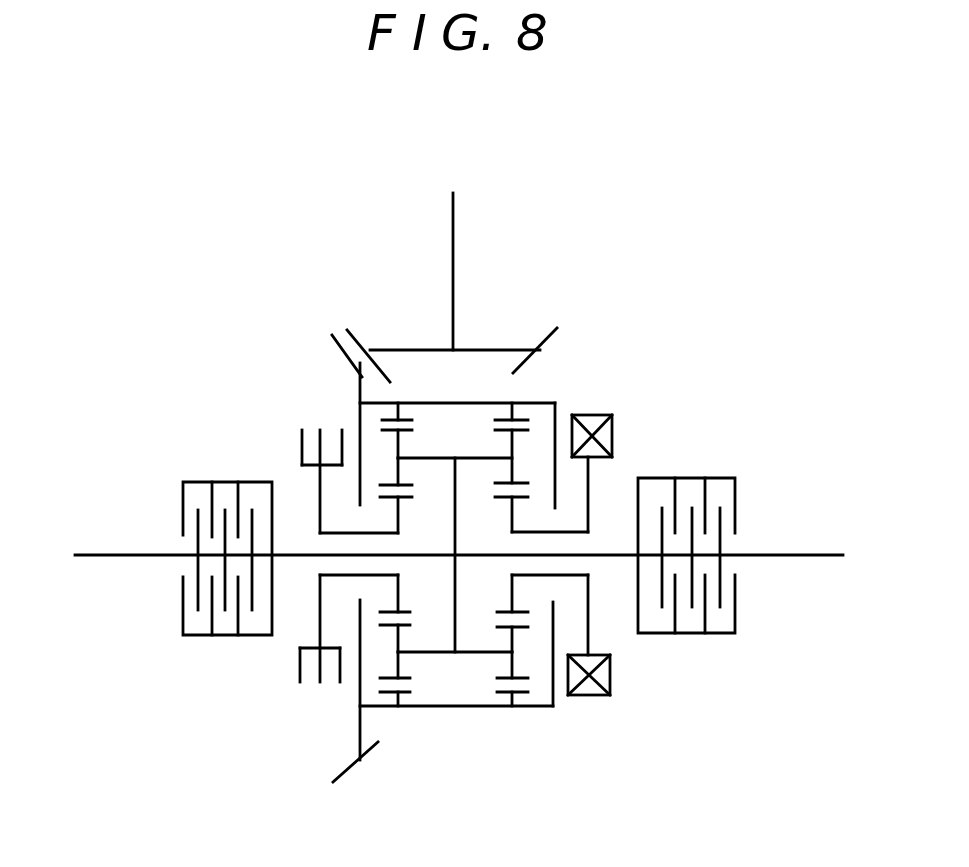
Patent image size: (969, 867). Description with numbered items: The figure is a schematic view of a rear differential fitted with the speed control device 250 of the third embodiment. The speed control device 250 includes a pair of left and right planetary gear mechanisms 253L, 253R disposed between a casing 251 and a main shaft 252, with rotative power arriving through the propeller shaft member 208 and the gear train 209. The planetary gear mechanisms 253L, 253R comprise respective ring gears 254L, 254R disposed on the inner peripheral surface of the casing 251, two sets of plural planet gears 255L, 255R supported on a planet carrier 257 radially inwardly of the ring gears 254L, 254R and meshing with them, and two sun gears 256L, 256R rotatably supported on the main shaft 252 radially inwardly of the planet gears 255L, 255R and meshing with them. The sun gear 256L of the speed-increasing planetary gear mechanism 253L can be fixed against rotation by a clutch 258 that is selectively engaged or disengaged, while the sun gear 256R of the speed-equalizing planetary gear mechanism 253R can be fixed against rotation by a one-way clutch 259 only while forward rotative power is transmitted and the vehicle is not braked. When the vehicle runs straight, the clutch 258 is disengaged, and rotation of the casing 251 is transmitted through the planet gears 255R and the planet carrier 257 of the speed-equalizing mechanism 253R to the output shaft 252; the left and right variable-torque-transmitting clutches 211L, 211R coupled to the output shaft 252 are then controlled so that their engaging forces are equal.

The propeller shaft member 208 is at (455, 240).
The gear train 209 is at (310, 295).
The left variable-torque-transmitting clutch 211L is at (158, 655).
The right variable-torque-transmitting clutch 211R is at (748, 470).
The speed control device 250 is at (445, 755).
The casing 251 is at (481, 710).
The main shaft 252 is at (475, 553).
The speed-increasing planetary gear mechanism 253L is at (358, 405).
The speed-equalizing planetary gear mechanism 253R is at (532, 685).
The ring gear 254L is at (415, 423).
The ring gear 254R is at (498, 687).
The planet gears 255L is at (435, 595).
The planet gears 255R is at (493, 630).
The sun gear 256L is at (410, 495).
The sun gear 256R is at (525, 612).
The planet carrier 257 is at (453, 486).
The clutch 258 is at (292, 692).
The one-way clutch 259 is at (618, 397).